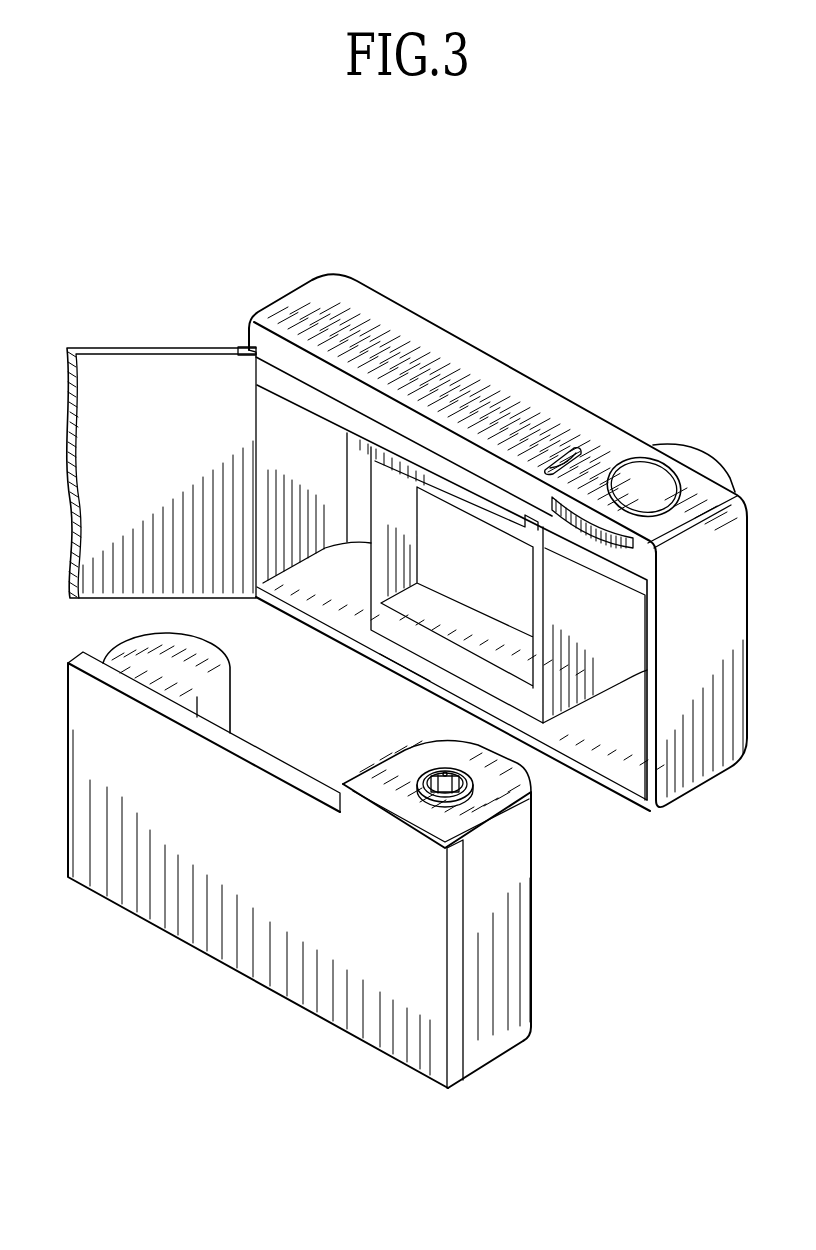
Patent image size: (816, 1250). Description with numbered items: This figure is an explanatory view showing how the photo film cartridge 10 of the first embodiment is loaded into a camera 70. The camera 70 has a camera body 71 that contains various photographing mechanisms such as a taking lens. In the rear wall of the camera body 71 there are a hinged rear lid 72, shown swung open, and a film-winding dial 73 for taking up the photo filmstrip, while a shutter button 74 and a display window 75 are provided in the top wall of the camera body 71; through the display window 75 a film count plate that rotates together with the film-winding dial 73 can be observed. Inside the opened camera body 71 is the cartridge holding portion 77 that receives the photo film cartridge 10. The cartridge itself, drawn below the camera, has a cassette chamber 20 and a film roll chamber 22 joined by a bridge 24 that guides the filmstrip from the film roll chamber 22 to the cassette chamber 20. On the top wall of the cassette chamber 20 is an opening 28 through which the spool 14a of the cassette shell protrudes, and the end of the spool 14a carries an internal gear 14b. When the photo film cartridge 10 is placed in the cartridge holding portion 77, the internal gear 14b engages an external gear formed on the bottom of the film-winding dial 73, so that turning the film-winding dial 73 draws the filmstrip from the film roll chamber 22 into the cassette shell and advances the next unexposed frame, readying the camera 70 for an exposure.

The photo film cartridge 10 is at (548, 945).
The spool 14a is at (472, 787).
The internal gear 14b is at (443, 770).
The cassette chamber 20 is at (517, 1033).
The film roll chamber 22 is at (135, 645).
The bridge 24 is at (309, 990).
The opening 28 is at (477, 800).
The camera 70 is at (255, 248).
The camera body 71 is at (388, 268).
The hinged rear lid 72 is at (118, 362).
The film-winding dial 73 is at (592, 522).
The shutter button 74 is at (650, 487).
The display window 75 is at (562, 455).
The cartridge holding portion 77 is at (422, 656).